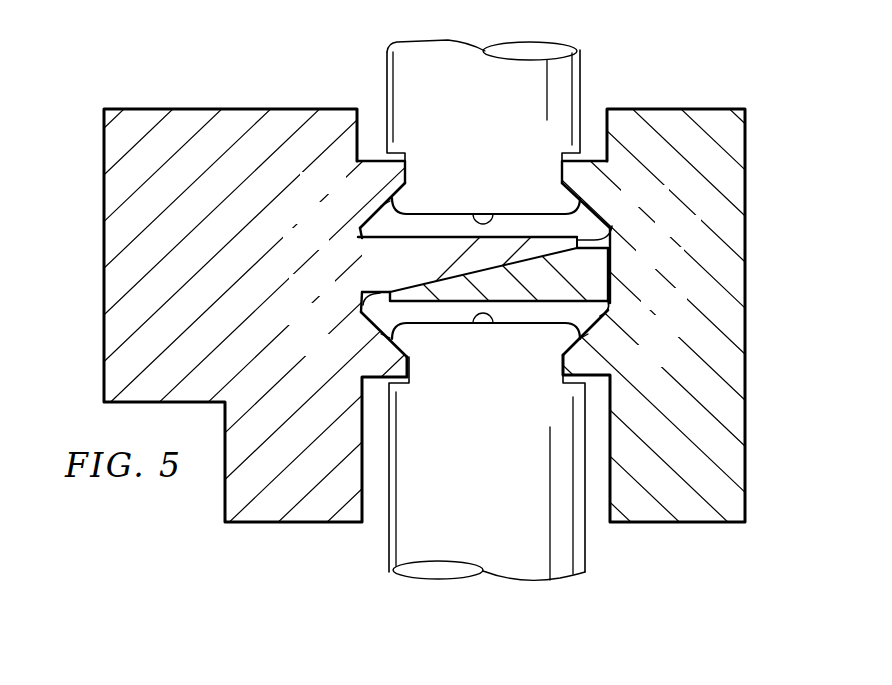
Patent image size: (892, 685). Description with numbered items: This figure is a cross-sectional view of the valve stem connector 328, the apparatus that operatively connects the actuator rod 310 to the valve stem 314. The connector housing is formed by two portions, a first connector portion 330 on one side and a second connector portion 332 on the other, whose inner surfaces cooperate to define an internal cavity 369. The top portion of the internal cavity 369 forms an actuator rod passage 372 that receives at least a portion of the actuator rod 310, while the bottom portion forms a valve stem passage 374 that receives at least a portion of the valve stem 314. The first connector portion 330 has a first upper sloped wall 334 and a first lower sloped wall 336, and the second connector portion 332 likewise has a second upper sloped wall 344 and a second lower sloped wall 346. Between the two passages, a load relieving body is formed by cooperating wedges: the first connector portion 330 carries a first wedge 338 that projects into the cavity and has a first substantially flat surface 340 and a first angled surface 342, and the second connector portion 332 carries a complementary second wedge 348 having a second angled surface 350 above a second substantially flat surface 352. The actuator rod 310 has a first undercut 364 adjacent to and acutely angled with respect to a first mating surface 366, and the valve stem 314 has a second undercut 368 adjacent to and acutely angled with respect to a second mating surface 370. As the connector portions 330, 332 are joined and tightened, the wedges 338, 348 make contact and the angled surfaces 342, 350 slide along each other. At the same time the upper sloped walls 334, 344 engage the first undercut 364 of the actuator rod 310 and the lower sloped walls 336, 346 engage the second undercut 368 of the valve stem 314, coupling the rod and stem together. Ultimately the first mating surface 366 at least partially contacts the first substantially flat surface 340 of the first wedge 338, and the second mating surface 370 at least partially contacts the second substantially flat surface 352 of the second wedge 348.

The valve stem connector 328 is at (214, 55).
The actuator rod 310 is at (385, 73).
The valve stem 314 is at (388, 546).
The first connector portion 330 is at (104, 247).
The second connector portion 332 is at (747, 266).
The first upper sloped wall 334 is at (392, 180).
The second upper sloped wall 344 is at (573, 184).
The first lower sloped wall 336 is at (392, 353).
The second lower sloped wall 346 is at (574, 346).
The first wedge 338 is at (420, 270).
The second wedge 348 is at (560, 292).
The first substantially flat surface 340 is at (368, 237).
The second angled surface 350 is at (614, 247).
The first angled surface 342 is at (362, 302).
The second substantially flat surface 352 is at (612, 285).
The first undercut 364 is at (403, 200).
The first mating surface 366 is at (474, 212).
The second undercut 368 is at (403, 337).
The internal cavity 369 is at (606, 109).
The second mating surface 370 is at (478, 325).
The actuator rod passage 372 is at (383, 205).
The valve stem passage 374 is at (362, 322).